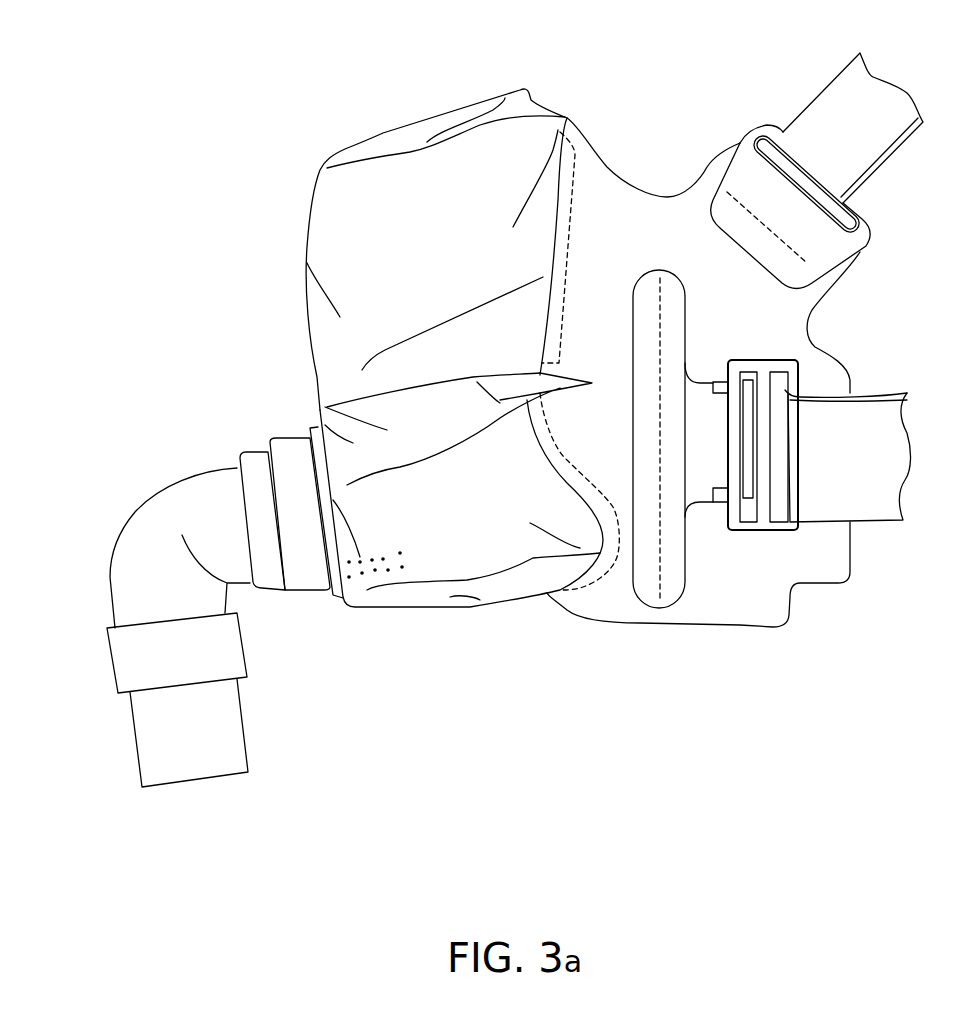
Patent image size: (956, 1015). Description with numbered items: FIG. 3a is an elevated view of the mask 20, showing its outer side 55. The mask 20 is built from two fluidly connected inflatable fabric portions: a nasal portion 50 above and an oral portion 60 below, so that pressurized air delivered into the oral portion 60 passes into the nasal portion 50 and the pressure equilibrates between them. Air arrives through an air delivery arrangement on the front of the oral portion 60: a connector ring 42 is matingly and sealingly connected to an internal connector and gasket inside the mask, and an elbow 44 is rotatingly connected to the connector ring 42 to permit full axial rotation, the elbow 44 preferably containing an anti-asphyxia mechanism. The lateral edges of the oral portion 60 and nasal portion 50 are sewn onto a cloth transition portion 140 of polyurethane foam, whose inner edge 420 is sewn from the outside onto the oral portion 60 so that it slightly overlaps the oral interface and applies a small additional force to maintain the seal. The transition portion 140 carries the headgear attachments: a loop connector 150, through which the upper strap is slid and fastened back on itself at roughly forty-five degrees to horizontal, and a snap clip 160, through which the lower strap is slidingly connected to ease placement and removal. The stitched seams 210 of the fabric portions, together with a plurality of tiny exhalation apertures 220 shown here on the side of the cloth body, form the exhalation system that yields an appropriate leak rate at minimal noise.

The mask 20 is at (296, 175).
The connector ring 42 is at (290, 447).
The elbow 44 is at (140, 533).
The nasal portion 50 is at (380, 208).
The outer side 55 is at (368, 273).
The oral portion 60 is at (387, 430).
The cloth transition portion 140 is at (602, 203).
The loop connector 150 is at (753, 127).
The snap clip 160 is at (747, 527).
The seam 210 is at (405, 154).
The exhalation aperture 220 is at (360, 587).
The inner edge 420 is at (592, 583).